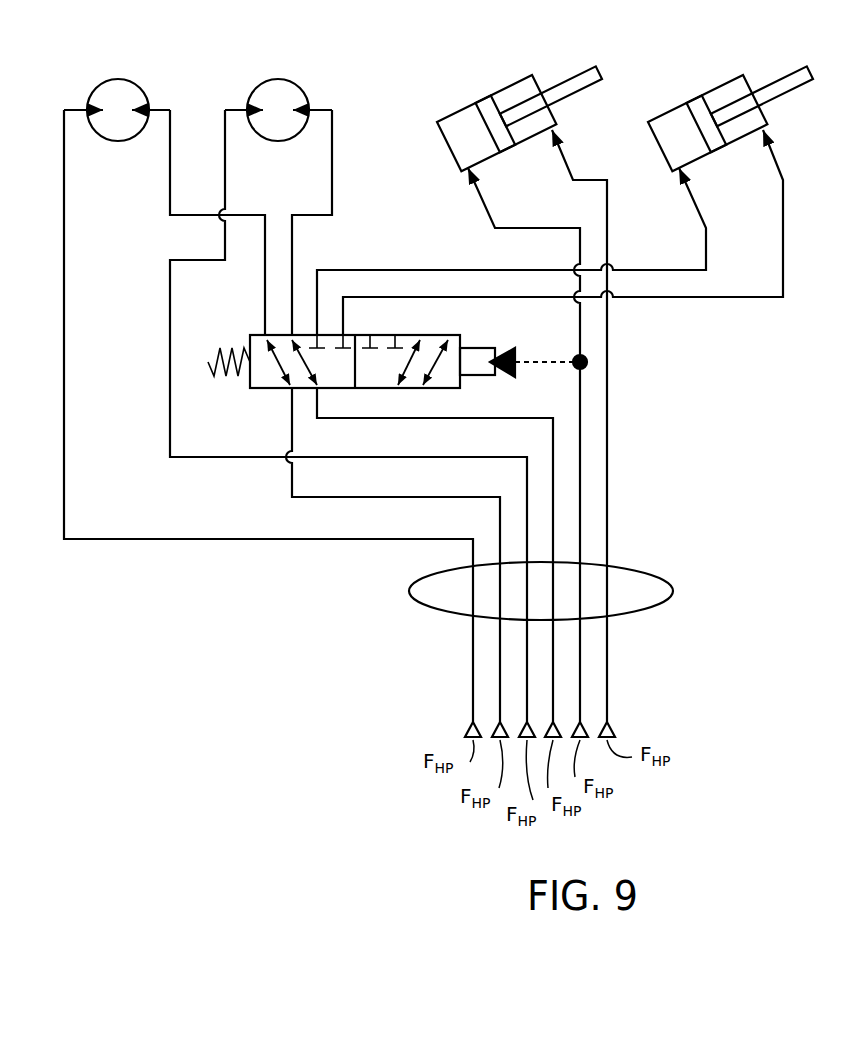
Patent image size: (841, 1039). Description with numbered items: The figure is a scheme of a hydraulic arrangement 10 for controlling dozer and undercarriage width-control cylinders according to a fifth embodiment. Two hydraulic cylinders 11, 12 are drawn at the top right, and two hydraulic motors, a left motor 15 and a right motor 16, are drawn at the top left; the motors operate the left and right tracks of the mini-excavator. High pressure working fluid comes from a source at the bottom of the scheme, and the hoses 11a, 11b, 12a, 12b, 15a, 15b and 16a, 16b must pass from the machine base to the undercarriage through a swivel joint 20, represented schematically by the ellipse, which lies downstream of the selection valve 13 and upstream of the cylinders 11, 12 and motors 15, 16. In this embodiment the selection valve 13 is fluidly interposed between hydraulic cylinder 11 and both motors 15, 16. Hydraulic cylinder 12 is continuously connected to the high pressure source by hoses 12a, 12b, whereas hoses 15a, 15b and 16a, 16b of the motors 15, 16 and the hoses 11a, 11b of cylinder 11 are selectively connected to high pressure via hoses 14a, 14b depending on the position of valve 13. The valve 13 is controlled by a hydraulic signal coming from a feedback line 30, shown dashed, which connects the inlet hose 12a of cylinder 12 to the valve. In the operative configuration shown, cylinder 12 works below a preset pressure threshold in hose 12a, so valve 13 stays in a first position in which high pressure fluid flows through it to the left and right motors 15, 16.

The hydraulic arrangement 10 is at (265, 613).
The hydraulic cylinder 11 is at (675, 107).
The hose 11a is at (693, 210).
The hose 11b is at (773, 163).
The hydraulic cylinder 12 is at (465, 108).
The inlet hose 12a is at (482, 210).
The hose 12b is at (563, 163).
The selection valve 13 is at (462, 323).
The hose 14a is at (343, 500).
The hose 14b is at (330, 418).
The left motor 15 is at (278, 79).
The hose 15a is at (226, 155).
The hose 15b is at (333, 138).
The right motor 16 is at (118, 79).
The hose 16a is at (66, 300).
The hose 16b is at (168, 182).
The swivel joint 20 is at (640, 584).
The feedback line 30 is at (547, 365).